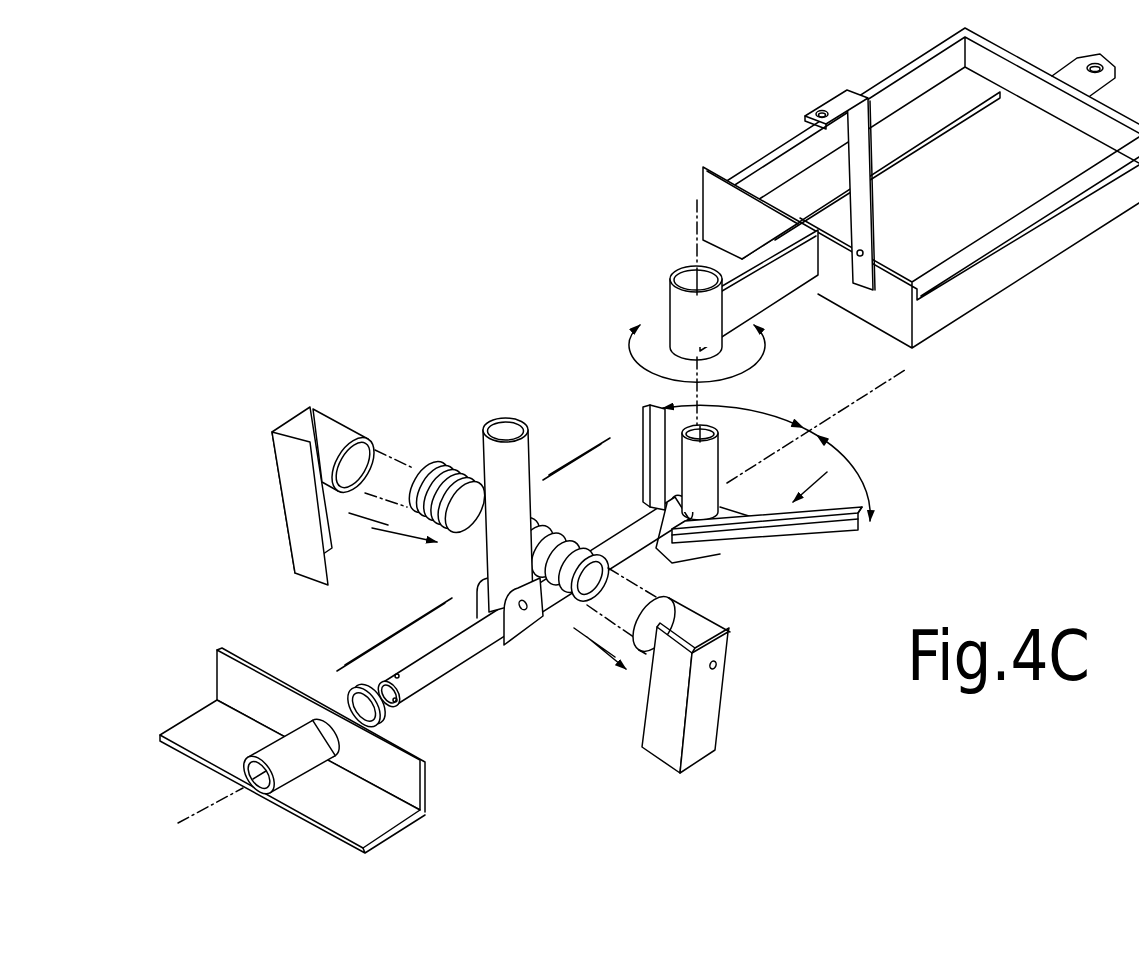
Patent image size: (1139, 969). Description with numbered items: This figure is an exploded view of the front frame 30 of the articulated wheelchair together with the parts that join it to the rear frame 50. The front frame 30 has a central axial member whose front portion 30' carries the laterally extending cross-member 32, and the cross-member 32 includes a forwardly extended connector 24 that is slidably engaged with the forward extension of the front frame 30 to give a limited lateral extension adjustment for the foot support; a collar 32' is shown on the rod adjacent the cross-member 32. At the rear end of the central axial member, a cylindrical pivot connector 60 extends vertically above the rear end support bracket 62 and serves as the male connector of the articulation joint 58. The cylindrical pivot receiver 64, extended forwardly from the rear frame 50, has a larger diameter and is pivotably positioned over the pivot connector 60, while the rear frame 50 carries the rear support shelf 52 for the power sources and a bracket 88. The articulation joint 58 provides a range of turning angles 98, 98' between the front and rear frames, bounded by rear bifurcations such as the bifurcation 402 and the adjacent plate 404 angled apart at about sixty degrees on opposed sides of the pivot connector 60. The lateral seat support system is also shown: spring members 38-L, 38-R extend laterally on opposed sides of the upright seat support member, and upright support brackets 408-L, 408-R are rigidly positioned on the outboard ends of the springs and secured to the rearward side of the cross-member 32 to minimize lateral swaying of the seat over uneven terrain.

The mounting bracket 88 is at (838, 102).
The rear support shelf 52 is at (980, 201).
The cylindrical pivot receiver 64 is at (713, 335).
The rear frame 50 is at (757, 290).
The turning angle 98' is at (719, 364).
The plate 404 is at (643, 438).
The right spring member 38-R is at (442, 472).
The pivot connector 60 is at (713, 475).
The rear end support bracket 62 is at (732, 508).
The articulation joint 58 is at (816, 436).
The turning angle 98 is at (790, 463).
The left spring member 38-L is at (565, 535).
The right support bracket 408-R is at (292, 502).
The rear bifurcation 402 is at (847, 533).
The collar 32' is at (337, 683).
The cross-member 32 is at (323, 750).
The front portion of the front frame 30' is at (535, 602).
The left support bracket 408-L is at (705, 718).
The front frame 30 is at (481, 622).
The forwardly extended connector 24 is at (293, 767).